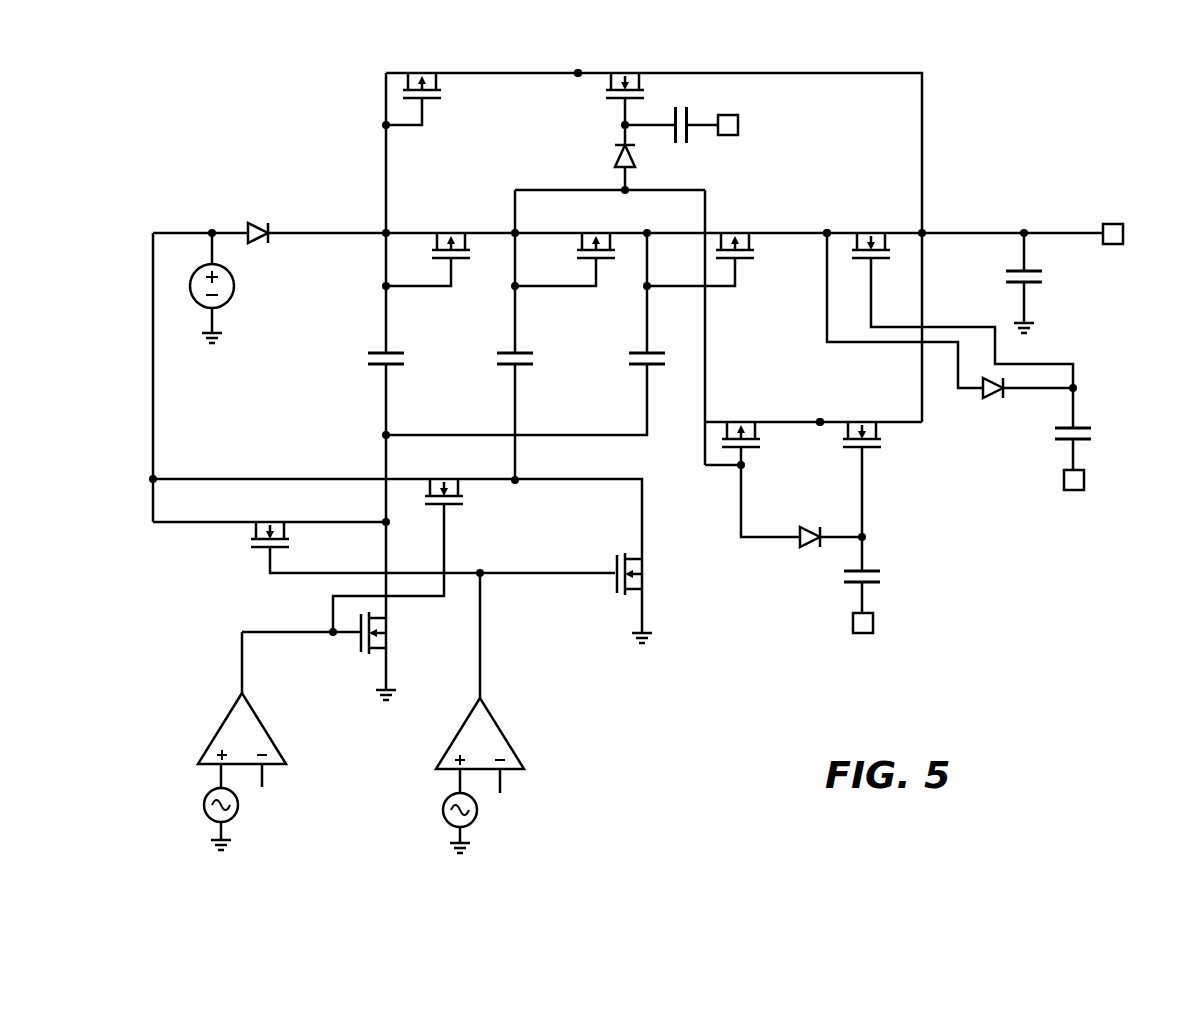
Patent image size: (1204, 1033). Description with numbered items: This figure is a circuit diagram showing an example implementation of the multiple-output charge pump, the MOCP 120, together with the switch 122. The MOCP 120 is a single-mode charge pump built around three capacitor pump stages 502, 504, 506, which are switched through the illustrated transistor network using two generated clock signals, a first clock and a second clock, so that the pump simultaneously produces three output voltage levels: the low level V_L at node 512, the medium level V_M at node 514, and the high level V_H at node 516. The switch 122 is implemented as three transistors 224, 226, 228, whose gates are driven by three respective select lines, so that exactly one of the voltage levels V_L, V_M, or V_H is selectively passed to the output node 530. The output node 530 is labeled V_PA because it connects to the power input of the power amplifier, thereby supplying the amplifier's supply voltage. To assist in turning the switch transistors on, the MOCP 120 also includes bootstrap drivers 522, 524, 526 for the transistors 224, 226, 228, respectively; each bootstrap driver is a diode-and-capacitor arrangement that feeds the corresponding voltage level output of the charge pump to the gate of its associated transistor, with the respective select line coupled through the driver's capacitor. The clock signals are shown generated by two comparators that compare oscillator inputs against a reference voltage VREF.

The MOCP 120 is at (673, 442).
The switch 122 is at (673, 442).
The transistor 224 is at (625, 73).
The transistor 226 is at (862, 422).
The transistor 228 is at (871, 233).
The capacitor pump stage 502 is at (370, 387).
The capacitor pump stage 504 is at (498, 387).
The capacitor pump stage 506 is at (628, 387).
The node 512 is at (578, 73).
The node 514 is at (820, 422).
The node 516 is at (827, 233).
The bootstrap driver 522 is at (692, 152).
The bootstrap driver 524 is at (876, 552).
The bootstrap driver 526 is at (1087, 406).
The output node 530 is at (1110, 224).